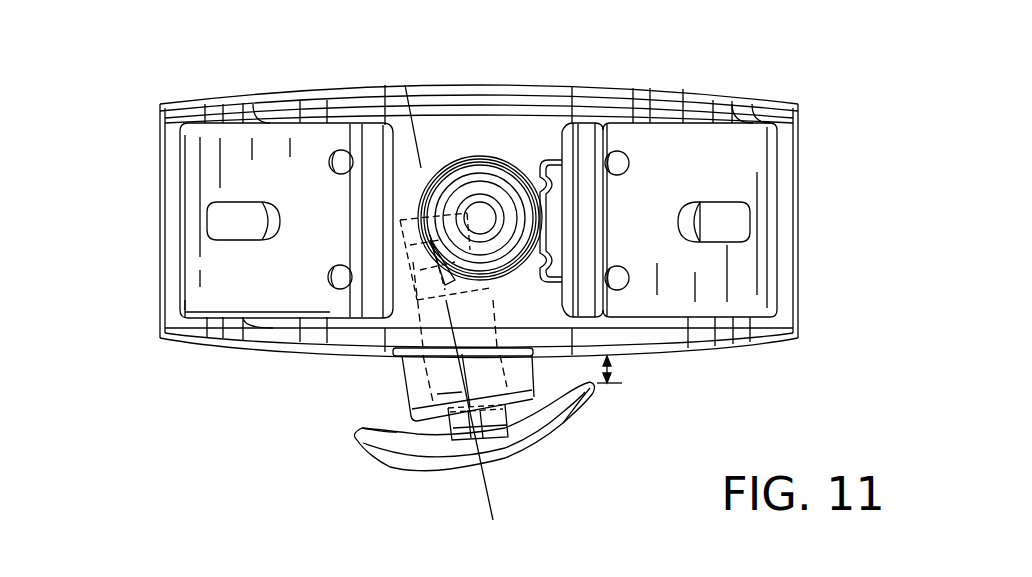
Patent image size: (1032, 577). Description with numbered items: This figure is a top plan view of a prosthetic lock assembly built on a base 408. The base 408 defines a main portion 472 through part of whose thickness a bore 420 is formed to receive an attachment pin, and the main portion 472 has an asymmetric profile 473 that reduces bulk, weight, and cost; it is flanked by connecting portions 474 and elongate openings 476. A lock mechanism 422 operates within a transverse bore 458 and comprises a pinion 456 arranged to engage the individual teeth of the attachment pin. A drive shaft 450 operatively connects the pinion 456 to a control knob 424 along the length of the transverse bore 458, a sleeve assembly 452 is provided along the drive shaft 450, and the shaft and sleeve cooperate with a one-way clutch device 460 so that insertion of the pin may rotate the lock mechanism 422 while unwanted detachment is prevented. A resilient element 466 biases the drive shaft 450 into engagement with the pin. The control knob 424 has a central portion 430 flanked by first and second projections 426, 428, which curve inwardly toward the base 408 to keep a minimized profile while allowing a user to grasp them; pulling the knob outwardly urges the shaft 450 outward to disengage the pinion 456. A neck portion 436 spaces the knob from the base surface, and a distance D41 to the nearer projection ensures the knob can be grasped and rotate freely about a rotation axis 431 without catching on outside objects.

The base 408 is at (770, 349).
The bore 420 is at (482, 212).
The lock mechanism 422 is at (493, 304).
The control knob 424 is at (375, 470).
The first projection 426 is at (403, 460).
The second projection 428 is at (577, 430).
The central portion 430 is at (497, 497).
The rotation axis 431 is at (405, 80).
The neck portion 436 is at (372, 445).
The drive shaft 450 is at (475, 250).
The sleeve assembly 452 is at (443, 395).
The pinion 456 is at (402, 239).
The transverse bore 458 is at (410, 213).
The one-way clutch device 460 is at (433, 417).
The resilient element 466 is at (410, 262).
The main portion 472 is at (453, 140).
The profile 473 is at (557, 212).
The connecting portions 474 is at (649, 143).
The elongate openings 476 is at (717, 213).
The distance D41 is at (622, 368).